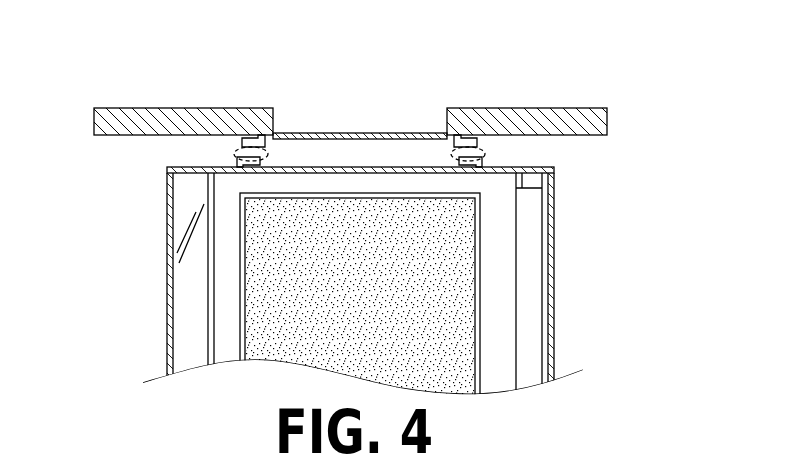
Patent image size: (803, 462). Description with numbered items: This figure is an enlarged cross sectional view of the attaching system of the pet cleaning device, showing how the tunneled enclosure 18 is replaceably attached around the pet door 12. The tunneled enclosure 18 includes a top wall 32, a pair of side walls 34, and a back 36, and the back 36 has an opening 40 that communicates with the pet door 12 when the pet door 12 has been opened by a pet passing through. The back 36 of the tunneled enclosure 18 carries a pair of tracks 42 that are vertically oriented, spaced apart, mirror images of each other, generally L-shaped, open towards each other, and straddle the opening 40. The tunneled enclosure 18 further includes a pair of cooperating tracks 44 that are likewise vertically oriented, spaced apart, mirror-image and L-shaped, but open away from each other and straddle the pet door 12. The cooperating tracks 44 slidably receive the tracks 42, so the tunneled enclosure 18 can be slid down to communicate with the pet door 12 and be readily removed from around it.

The pet door 12 is at (306, 101).
The tunneled enclosure 18 is at (156, 245).
The top wall 32 is at (228, 204).
The side walls 34 is at (158, 296).
The back 36 is at (540, 154).
The opening 40 is at (380, 167).
The tracks 42 is at (470, 167).
The cooperating tracks 44 is at (242, 141).